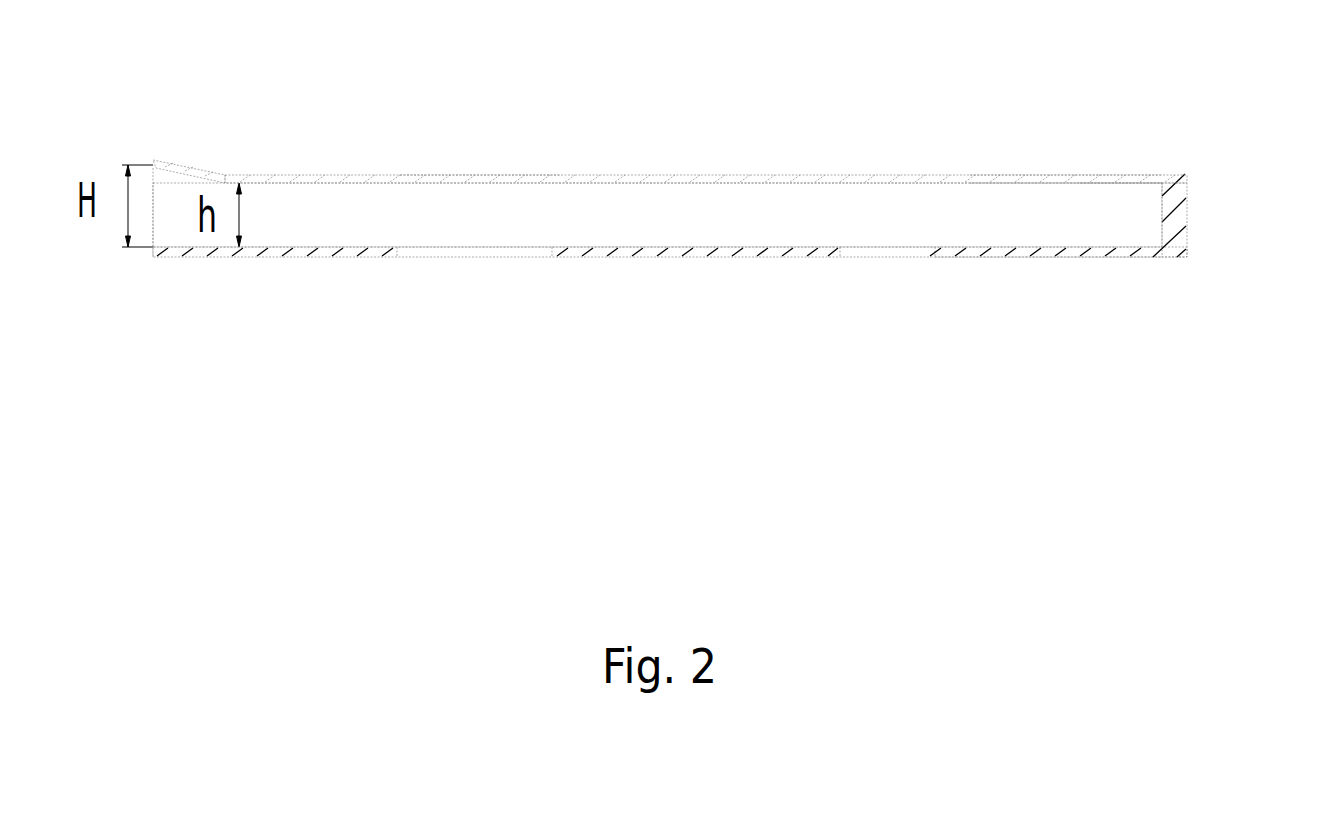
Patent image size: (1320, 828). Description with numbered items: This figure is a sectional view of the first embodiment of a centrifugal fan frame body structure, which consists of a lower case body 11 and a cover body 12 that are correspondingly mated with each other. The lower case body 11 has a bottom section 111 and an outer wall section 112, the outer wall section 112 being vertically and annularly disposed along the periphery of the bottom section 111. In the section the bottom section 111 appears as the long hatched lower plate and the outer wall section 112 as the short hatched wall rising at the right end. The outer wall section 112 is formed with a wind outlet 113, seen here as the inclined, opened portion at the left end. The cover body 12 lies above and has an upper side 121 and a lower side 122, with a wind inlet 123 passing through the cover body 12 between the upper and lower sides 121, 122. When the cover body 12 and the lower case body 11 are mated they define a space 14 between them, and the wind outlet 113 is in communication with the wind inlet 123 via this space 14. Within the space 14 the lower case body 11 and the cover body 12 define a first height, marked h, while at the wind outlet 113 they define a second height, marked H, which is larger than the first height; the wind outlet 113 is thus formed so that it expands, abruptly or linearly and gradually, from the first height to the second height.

The lower case body 11 is at (322, 253).
The bottom section 111 is at (1048, 255).
The outer wall section 112 is at (1173, 223).
The wind outlet 113 is at (172, 205).
The cover body 12 is at (337, 182).
The upper side 121 is at (1047, 175).
The lower side 122 is at (1088, 183).
The wind inlet 123 is at (477, 178).
The space 14 is at (685, 220).